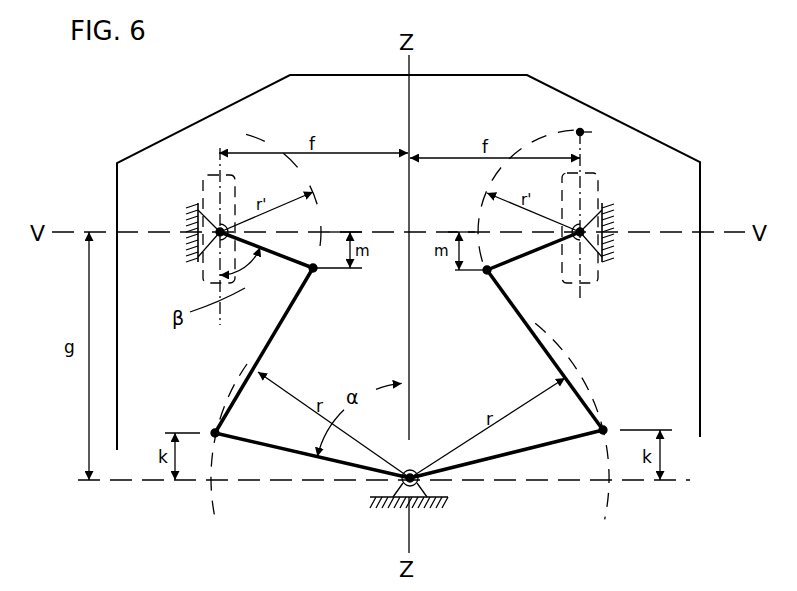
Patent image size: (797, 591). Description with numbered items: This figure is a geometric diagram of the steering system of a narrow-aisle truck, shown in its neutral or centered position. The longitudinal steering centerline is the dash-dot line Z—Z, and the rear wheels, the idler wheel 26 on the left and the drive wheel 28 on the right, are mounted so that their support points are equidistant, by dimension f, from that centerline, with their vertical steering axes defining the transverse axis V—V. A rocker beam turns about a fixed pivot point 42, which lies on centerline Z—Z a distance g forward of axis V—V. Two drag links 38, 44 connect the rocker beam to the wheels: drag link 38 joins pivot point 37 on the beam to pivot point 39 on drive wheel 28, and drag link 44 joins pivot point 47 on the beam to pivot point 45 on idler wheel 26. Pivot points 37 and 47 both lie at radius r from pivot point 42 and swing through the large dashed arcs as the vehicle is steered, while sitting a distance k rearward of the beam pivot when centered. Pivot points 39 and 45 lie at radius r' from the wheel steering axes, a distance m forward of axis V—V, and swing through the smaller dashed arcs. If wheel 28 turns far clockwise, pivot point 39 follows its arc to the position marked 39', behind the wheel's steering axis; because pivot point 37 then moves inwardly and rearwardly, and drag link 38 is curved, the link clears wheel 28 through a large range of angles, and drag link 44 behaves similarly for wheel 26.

The idler wheel 26 is at (203, 178).
The drive wheel 28 is at (597, 178).
The pivot point 37 is at (609, 430).
The drag link 38 is at (533, 342).
The pivot point 39 is at (531, 263).
The displaced pivot point 39' is at (601, 139).
The pivot point 42 is at (412, 470).
The drag link 44 is at (266, 356).
The pivot point 45 is at (305, 270).
The pivot point 47 is at (214, 430).